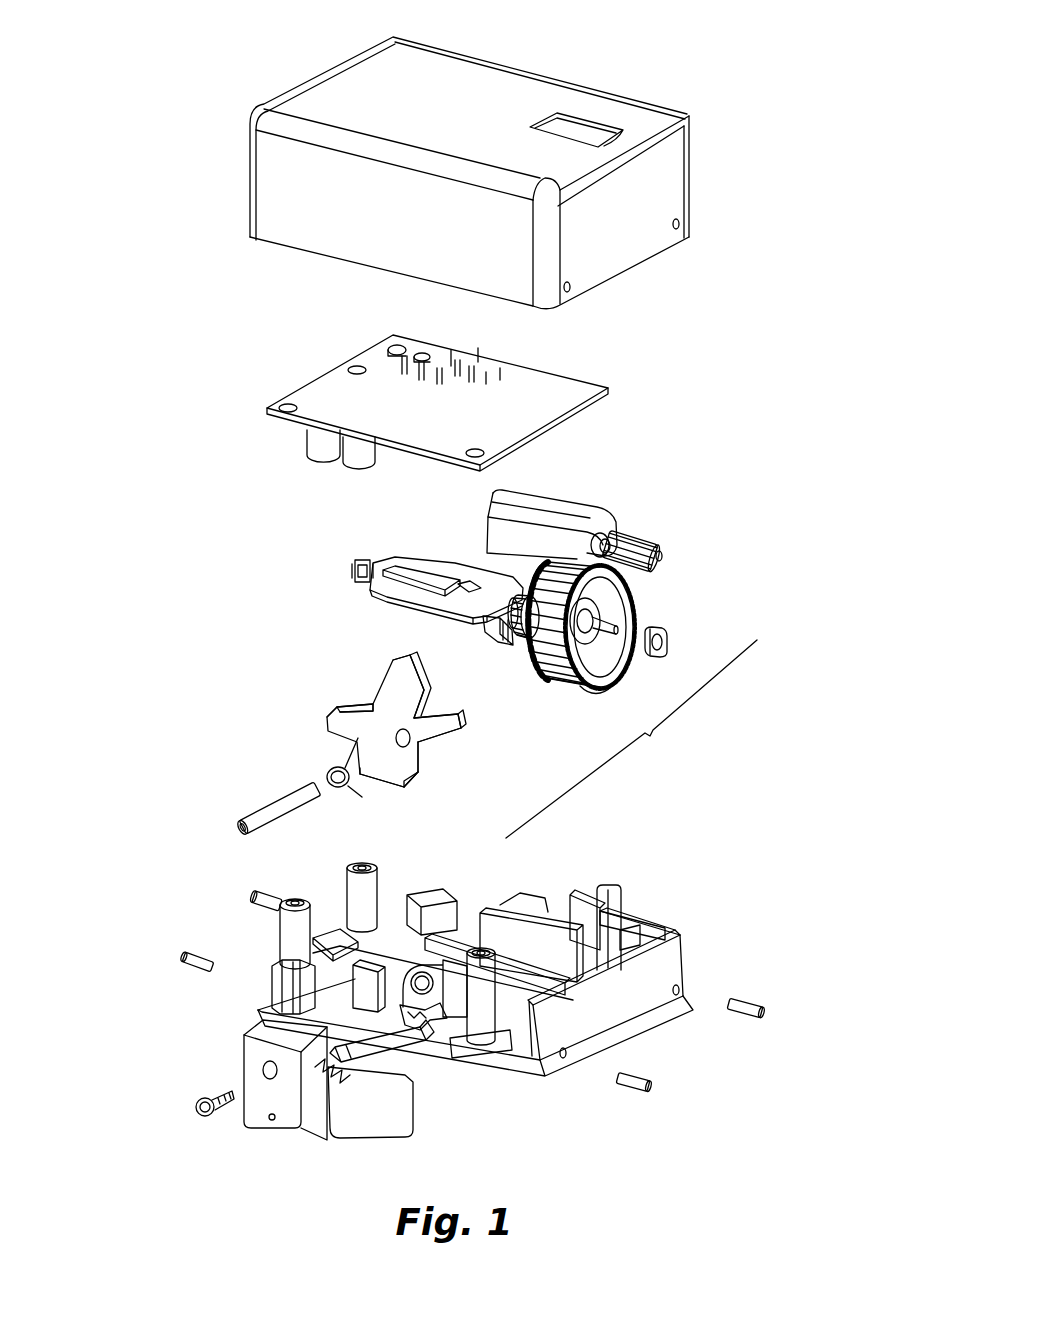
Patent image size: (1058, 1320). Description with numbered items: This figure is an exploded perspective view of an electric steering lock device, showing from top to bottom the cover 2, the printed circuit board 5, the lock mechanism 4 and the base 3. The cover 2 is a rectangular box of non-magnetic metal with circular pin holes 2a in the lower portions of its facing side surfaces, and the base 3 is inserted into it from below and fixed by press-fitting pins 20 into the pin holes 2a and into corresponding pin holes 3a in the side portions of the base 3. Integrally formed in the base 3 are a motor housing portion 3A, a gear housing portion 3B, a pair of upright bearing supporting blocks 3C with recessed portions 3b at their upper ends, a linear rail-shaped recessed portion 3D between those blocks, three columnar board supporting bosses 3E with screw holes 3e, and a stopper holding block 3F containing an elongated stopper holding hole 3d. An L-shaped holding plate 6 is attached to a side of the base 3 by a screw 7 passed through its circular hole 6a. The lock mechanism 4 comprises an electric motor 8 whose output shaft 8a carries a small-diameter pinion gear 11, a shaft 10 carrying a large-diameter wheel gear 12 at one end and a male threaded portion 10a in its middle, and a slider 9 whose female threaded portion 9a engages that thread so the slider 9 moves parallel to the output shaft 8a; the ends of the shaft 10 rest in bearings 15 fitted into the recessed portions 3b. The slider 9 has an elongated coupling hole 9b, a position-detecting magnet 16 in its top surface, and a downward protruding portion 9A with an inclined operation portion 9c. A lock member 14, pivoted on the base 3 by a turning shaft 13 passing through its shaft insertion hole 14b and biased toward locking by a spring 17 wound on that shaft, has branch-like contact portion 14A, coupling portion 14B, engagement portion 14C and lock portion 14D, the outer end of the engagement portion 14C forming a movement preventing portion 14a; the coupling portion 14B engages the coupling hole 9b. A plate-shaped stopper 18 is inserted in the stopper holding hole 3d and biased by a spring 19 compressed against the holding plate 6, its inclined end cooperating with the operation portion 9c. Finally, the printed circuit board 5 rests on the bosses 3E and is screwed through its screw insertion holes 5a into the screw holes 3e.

The cover 2 is at (540, 94).
The pin holes 2a is at (682, 224).
The base 3 is at (699, 946).
The pin holes 3a is at (682, 990).
The motor housing portion 3A is at (578, 908).
The gear housing portion 3B is at (621, 912).
The recessed portions 3b is at (447, 905).
The bearing supporting blocks 3C is at (480, 910).
The rail-shaped recessed portion 3D is at (550, 960).
The stopper holding hole 3d is at (448, 1052).
The board supporting bosses 3E is at (345, 878).
The screw holes 3e is at (366, 864).
The stopper holding block 3F is at (411, 965).
The lock mechanism 4 is at (671, 768).
The printed circuit board 5 is at (552, 388).
The screw insertion holes 5a is at (355, 365).
The holding plate 6 is at (252, 1028).
The circular hole 6a is at (262, 1071).
The screw 7 is at (210, 1125).
The electric motor 8 is at (588, 498).
The output shaft 8a is at (664, 562).
The slider 9 is at (392, 600).
The female threaded portion 9a is at (497, 652).
The protruding portion 9A is at (503, 640).
The coupling hole 9b is at (418, 566).
The operation portion 9c is at (484, 638).
The shaft 10 is at (634, 612).
The male threaded portion 10a is at (572, 616).
The pinion gear 11 is at (645, 538).
The wheel gear 12 is at (590, 690).
The turning shaft 13 is at (268, 806).
The lock member 14 is at (373, 693).
The contact portion 14A is at (336, 708).
The movement preventing portion 14a is at (436, 734).
The coupling portion 14B is at (416, 678).
The shaft insertion hole 14b is at (403, 748).
The engagement portion 14C is at (440, 742).
The lock portion 14D is at (402, 788).
The bearings 15 is at (355, 560).
The magnet 16 is at (466, 564).
The spring 17 is at (336, 767).
The stopper 18 is at (408, 1072).
The spring 19 is at (338, 1078).
The pins 20 is at (262, 890).